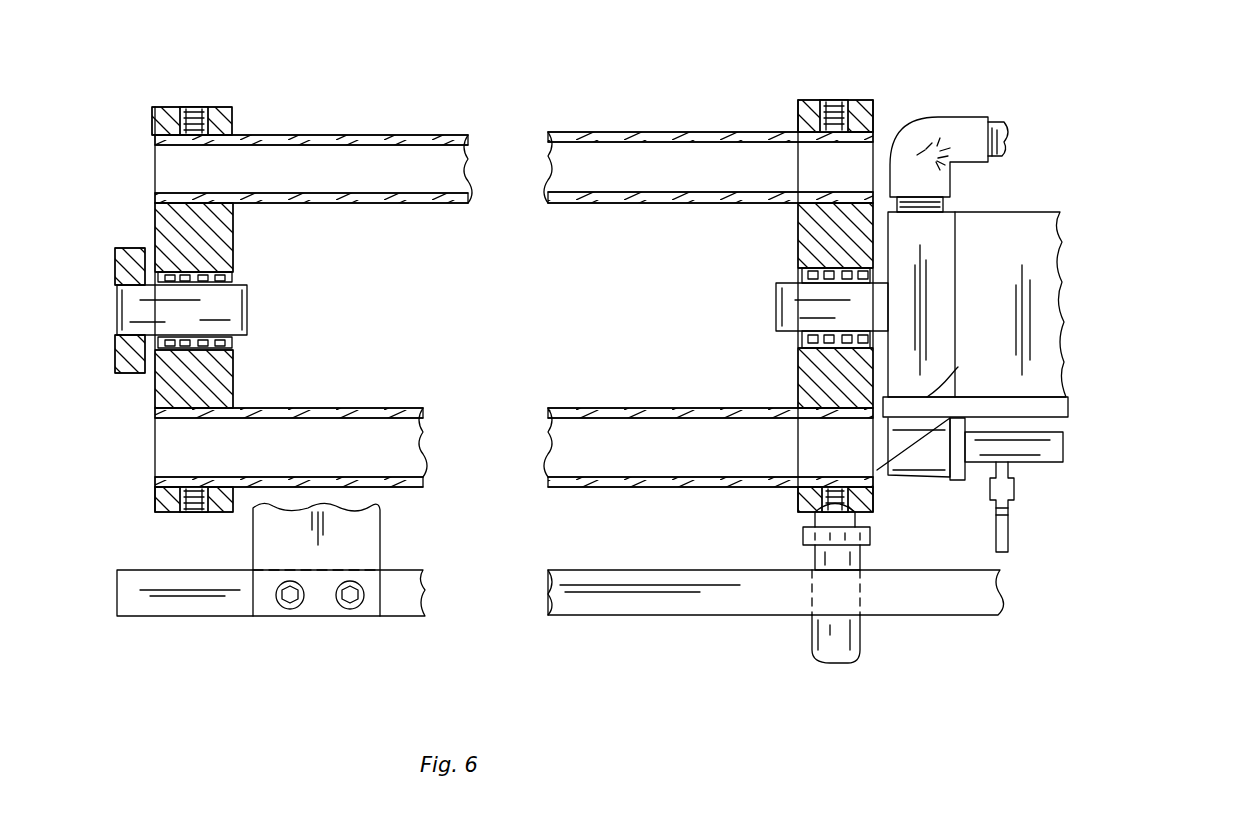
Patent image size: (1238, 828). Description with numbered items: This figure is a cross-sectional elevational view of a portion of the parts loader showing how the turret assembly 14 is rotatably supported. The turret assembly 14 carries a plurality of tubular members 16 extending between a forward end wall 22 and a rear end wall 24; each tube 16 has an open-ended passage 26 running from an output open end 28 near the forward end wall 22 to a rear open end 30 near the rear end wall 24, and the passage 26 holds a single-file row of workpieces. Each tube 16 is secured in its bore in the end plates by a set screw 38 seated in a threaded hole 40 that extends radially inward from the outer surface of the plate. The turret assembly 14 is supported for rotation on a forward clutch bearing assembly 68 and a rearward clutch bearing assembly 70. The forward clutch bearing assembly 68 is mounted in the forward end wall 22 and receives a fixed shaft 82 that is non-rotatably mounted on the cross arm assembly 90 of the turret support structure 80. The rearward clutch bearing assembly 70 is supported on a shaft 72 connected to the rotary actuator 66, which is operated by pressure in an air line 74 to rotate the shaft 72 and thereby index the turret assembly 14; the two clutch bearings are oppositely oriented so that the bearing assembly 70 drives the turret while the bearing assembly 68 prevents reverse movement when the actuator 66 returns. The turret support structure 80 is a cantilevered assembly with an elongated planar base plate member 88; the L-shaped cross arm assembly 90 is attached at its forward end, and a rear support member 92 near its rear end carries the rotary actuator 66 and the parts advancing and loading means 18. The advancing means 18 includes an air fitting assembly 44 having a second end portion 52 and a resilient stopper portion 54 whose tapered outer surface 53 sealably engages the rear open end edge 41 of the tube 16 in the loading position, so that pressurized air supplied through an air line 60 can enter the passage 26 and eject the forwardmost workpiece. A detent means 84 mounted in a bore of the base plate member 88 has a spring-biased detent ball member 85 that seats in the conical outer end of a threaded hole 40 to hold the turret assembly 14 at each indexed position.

The turret assembly 14 is at (153, 499).
The tubular member 16 is at (340, 135).
The parts advancing and loading means 18 is at (1130, 460).
The forward end wall 22 is at (152, 118).
The rear end wall 24 is at (798, 112).
The passage 26 is at (430, 145).
The output open end 28 is at (155, 195).
The rear open end 30 is at (845, 145).
The set screw 38 is at (200, 110).
The threaded hole 40 is at (190, 107).
The rear open end edge 41 is at (933, 406).
The air fitting assembly 44 is at (1060, 464).
The second end portion 52 is at (1068, 432).
The tapered outer surface 53 is at (920, 477).
The stopper portion 54 is at (938, 478).
The air line 60 is at (1014, 550).
The rotary actuator 66 is at (1030, 212).
The forward clutch bearing assembly 68 is at (232, 274).
The rearward clutch bearing assembly 70 is at (798, 272).
The shaft 72 is at (776, 306).
The air line 74 is at (968, 117).
The turret support structure 80 is at (385, 618).
The fixed shaft 82 is at (247, 306).
The detent means 84 is at (812, 642).
The detent ball member 85 is at (805, 518).
The base plate member 88 is at (570, 615).
The cross arm assembly 90 is at (113, 268).
The rear support member 92 is at (1068, 404).